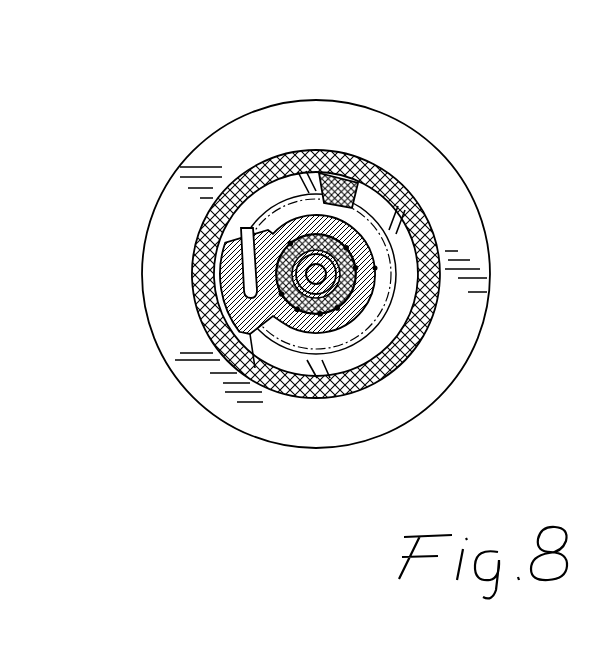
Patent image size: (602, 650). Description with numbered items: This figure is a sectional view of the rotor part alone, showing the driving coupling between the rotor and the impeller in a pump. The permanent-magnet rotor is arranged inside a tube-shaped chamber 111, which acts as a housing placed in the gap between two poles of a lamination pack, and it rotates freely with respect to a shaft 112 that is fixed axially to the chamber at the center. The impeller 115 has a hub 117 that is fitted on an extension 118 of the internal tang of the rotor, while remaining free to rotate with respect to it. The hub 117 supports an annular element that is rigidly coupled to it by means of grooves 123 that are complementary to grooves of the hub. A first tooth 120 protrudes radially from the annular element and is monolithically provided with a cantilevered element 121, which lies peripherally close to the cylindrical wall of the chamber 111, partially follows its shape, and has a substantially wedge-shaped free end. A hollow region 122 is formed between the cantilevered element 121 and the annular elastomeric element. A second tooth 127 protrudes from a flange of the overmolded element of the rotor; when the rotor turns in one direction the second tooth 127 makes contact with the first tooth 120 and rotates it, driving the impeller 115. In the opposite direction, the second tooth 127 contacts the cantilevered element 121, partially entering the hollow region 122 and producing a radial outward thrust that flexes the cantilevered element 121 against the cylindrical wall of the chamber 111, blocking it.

The tube-shaped chamber 111 is at (427, 212).
The shaft 112 is at (316, 273).
The impeller 115 is at (400, 320).
The hub 117 is at (293, 303).
The extension 118 is at (290, 307).
The first tooth 120 is at (250, 334).
The cantilevered element 121 is at (230, 268).
The hollow region 122 is at (246, 236).
The grooves 123 is at (375, 268).
The second tooth 127 is at (360, 196).